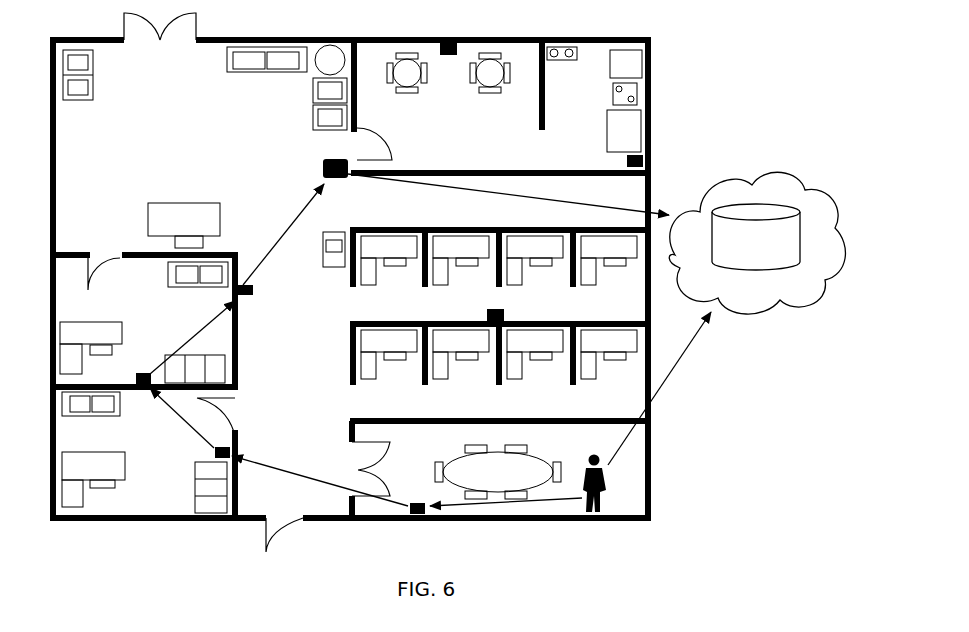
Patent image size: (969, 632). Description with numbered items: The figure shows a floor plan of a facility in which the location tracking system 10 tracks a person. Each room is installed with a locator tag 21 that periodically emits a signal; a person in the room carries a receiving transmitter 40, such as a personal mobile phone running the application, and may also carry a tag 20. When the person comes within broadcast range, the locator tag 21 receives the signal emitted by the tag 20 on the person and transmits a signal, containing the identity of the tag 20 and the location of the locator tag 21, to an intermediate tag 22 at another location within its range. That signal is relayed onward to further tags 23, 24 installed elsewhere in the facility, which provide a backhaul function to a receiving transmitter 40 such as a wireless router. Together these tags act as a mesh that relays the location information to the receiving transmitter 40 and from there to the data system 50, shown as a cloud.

The location tracking system 10 is at (718, 130).
The data system 50 is at (768, 183).
The receiving transmitter 40 is at (322, 165).
The further tag 24 is at (258, 292).
The further tag 23 is at (136, 378).
The intermediate tag 22 is at (215, 452).
The locator tag 21 is at (418, 514).
The tag 20 is at (594, 512).